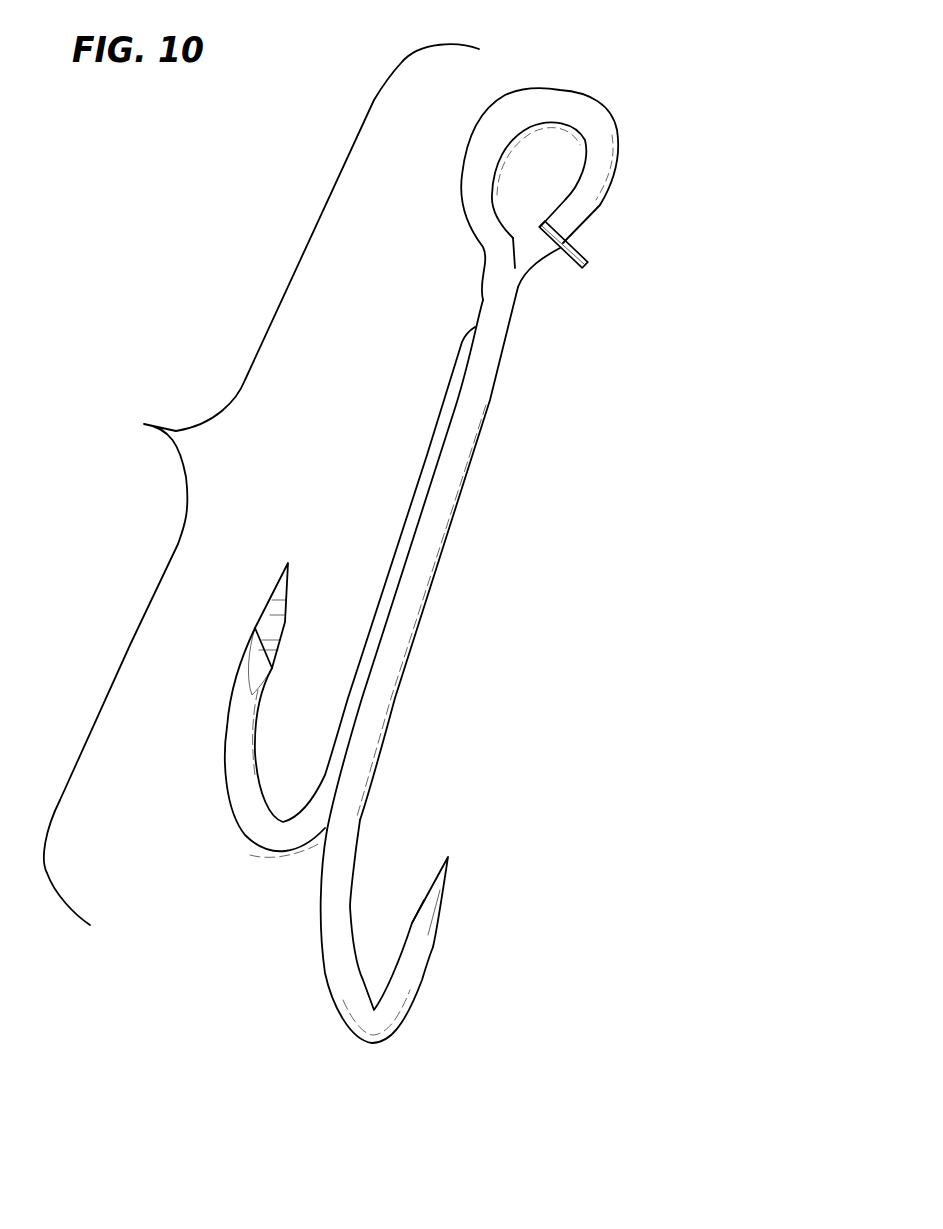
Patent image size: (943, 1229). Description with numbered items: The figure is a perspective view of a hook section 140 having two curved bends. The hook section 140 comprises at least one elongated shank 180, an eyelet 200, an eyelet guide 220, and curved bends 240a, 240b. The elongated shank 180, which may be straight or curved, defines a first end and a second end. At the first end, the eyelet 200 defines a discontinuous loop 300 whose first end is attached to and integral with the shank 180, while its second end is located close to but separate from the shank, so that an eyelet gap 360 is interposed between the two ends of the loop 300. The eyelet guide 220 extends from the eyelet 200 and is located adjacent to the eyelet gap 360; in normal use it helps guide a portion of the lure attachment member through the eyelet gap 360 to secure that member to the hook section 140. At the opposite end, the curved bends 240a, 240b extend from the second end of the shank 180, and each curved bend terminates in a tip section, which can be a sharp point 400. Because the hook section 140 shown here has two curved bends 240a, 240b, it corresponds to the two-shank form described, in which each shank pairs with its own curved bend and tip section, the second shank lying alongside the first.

The hook section 140 is at (150, 425).
The elongated shank 180 is at (565, 591).
The eyelet 200 is at (597, 310).
The eyelet guide 220 is at (565, 246).
The curved bend 240a is at (373, 1033).
The curved bend 240b is at (263, 837).
The discontinuous loop 300 is at (608, 133).
The eyelet gap 360 is at (572, 262).
The sharp point 400 is at (448, 857).